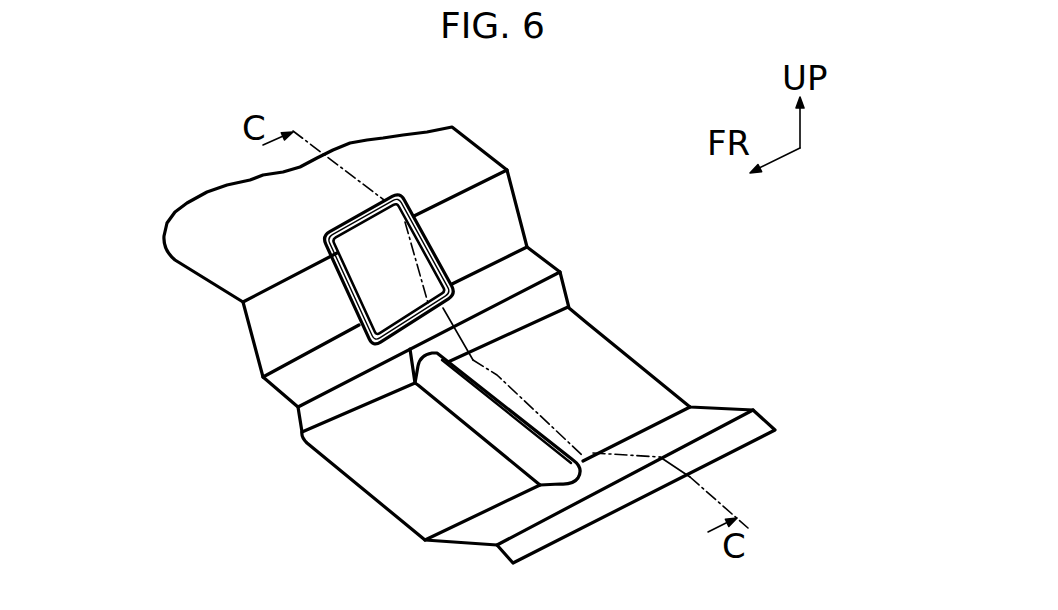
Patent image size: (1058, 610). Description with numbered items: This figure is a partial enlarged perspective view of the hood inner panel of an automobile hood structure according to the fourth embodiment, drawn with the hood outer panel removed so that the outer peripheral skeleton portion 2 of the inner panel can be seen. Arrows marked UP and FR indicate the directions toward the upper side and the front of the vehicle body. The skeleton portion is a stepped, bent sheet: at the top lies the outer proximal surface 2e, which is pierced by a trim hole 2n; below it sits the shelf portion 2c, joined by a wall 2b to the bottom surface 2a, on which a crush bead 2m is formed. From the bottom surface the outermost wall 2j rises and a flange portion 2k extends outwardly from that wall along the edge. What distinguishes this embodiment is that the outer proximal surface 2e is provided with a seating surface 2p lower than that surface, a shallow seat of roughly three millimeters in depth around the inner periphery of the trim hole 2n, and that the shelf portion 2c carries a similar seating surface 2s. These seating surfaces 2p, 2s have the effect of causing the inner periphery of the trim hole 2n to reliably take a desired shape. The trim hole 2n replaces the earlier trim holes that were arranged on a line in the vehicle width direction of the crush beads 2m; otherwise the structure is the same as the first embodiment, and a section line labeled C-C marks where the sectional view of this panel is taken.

The outer peripheral skeleton portion 2 is at (232, 407).
The outer proximal surface 2e is at (390, 153).
The trim hole 2n is at (390, 264).
The seating surface 2p is at (337, 227).
The shelf portion 2c is at (508, 272).
The wall 2b is at (535, 308).
The bottom surface 2a is at (562, 335).
The crush bead 2m is at (530, 407).
The seating surface 2s is at (403, 348).
The outermost wall 2j is at (693, 423).
The flange portion 2k is at (753, 428).